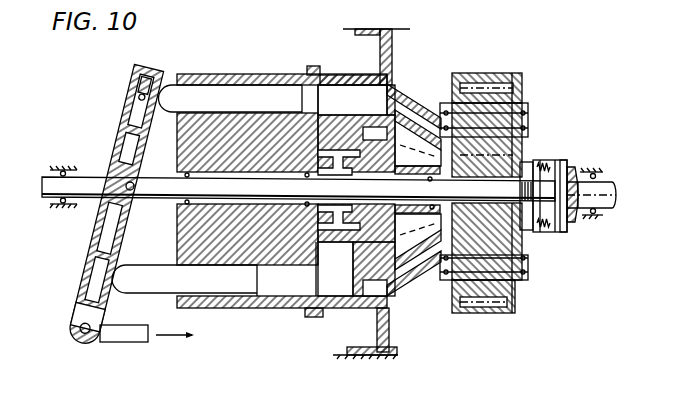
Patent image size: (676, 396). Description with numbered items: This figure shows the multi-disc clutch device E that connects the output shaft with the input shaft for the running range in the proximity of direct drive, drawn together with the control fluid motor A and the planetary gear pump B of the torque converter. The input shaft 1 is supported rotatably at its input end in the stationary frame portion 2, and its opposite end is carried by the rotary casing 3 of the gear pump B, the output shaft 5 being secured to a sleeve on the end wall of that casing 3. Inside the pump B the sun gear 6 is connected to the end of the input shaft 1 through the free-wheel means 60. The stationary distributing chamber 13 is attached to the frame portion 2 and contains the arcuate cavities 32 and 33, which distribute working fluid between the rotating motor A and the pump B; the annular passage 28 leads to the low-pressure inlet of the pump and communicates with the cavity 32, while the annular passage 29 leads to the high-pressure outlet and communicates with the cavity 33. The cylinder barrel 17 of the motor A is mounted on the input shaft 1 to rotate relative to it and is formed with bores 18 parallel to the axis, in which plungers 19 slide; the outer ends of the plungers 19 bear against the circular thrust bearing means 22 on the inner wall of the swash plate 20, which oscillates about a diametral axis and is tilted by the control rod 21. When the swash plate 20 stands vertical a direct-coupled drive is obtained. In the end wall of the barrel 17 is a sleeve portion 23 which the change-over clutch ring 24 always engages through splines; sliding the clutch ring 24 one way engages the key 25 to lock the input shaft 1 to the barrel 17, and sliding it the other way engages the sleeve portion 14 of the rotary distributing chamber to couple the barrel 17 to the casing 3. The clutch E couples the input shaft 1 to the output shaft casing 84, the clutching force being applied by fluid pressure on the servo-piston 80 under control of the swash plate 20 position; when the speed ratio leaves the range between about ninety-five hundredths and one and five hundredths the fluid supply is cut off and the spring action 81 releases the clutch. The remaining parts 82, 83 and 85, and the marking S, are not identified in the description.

The input shaft 1 is at (86, 200).
The stationary frame portion 2 is at (69, 166).
The rotary casing 3 is at (494, 75).
The output shaft 5 is at (610, 193).
The sun gear 6 is at (505, 235).
The stationary distributing chamber 13 is at (383, 78).
The sleeve portion 14 is at (345, 207).
The cylinder barrel 17 is at (178, 238).
The bores 18 is at (277, 296).
The plungers 19 is at (238, 88).
The swash plate 20 is at (137, 116).
The control rod 21 is at (118, 338).
The thrust bearing means 22 is at (143, 82).
The sleeve portion 23 is at (325, 151).
The change-over clutch ring 24 is at (323, 207).
The key 25 is at (323, 186).
The annular passage 28 is at (407, 98).
The annular passage 29 is at (406, 262).
The cavity 32 is at (334, 92).
The cavity 33 is at (334, 300).
The free-wheel means 60 is at (488, 205).
The servo-piston 80 is at (555, 208).
The spring action 81 is at (548, 163).
The spring 82 is at (556, 212).
The splines 83 is at (518, 218).
The output shaft casing 84 is at (525, 162).
The retainer 85 is at (568, 174).
The control fluid motor A is at (193, 64).
The planetary gear pump B is at (469, 62).
The multi-disc clutch device E is at (545, 144).
The shaft rotation direction S is at (162, 186).